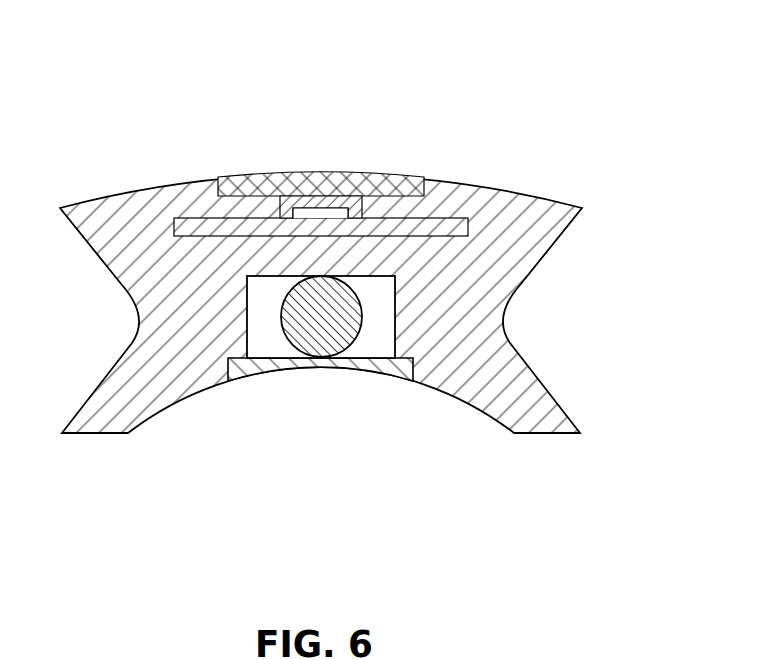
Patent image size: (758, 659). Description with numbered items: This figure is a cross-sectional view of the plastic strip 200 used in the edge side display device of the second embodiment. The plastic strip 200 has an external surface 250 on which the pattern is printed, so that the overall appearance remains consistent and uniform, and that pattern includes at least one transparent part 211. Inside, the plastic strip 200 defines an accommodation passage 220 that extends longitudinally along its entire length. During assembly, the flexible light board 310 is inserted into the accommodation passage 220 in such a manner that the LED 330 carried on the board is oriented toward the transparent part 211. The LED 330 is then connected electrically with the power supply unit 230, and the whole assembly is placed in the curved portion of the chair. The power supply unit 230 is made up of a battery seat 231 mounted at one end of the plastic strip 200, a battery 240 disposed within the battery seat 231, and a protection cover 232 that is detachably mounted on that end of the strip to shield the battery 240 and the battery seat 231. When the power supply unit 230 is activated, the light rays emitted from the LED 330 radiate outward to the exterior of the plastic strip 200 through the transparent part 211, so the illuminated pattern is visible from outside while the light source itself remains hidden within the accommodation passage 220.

The plastic strip 200 is at (370, 300).
The external surface 250 is at (120, 193).
The flexible light board 310 is at (400, 228).
The accommodation passage 220 is at (193, 217).
The transparent part 211 is at (327, 190).
The LED 330 is at (320, 213).
The power supply unit 230 is at (320, 435).
The battery seat 231 is at (263, 322).
The battery 240 is at (322, 315).
The protection cover 232 is at (368, 362).